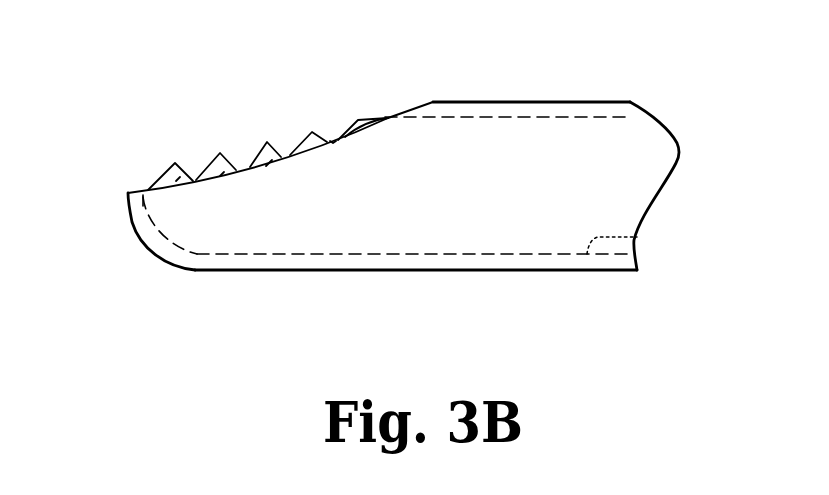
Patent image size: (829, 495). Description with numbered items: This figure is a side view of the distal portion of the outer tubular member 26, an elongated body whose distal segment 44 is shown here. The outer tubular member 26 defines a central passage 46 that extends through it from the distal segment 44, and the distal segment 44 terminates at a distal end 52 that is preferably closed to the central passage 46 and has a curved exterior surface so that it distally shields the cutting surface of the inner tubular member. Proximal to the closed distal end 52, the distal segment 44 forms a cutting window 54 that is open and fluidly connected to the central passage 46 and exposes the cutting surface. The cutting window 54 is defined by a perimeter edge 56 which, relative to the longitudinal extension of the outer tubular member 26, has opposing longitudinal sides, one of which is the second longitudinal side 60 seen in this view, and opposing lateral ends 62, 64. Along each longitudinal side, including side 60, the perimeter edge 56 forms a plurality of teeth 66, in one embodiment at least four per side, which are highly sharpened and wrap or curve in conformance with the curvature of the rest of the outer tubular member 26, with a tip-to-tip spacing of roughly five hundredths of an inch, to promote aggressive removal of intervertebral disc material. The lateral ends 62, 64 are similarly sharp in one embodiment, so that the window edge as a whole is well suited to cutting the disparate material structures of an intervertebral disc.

The outer tubular member 26 is at (387, 180).
The distal segment 44 is at (573, 102).
The central passage 46 is at (637, 237).
The distal end 52 is at (132, 221).
The cutting window 54 is at (236, 124).
The perimeter edge 56 is at (331, 126).
The second longitudinal side 60 is at (270, 162).
The lateral end 62 is at (134, 188).
The lateral end 64 is at (359, 120).
The teeth 66 is at (222, 174).